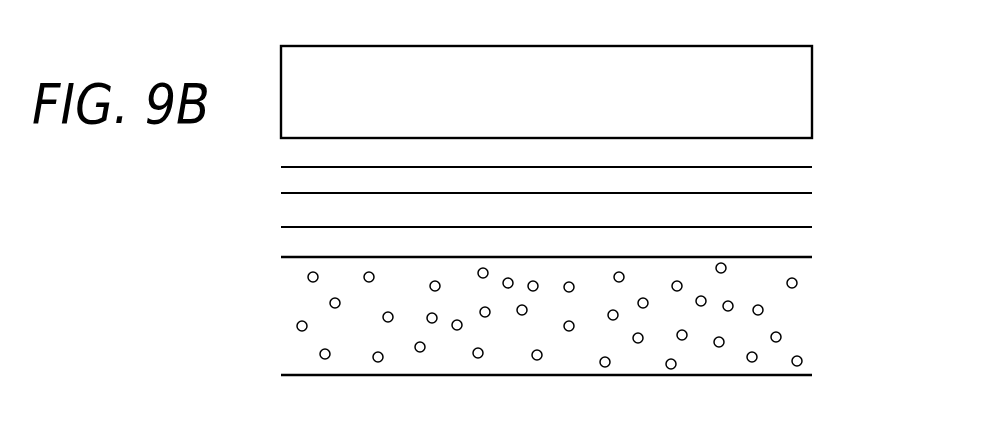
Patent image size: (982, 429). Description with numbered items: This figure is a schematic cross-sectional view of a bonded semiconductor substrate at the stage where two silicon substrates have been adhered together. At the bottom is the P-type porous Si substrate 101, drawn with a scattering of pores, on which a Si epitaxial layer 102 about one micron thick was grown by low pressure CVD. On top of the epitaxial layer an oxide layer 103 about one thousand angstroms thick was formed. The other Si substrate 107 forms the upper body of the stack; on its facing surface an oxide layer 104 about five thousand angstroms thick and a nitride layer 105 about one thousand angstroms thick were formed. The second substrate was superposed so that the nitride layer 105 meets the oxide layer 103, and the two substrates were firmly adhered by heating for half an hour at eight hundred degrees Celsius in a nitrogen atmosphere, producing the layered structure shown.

The porous Si substrate 101 is at (800, 316).
The Si epitaxial layer 102 is at (800, 240).
The oxide layer 103 is at (802, 209).
The oxide layer 104 is at (800, 152).
The nitride layer 105 is at (802, 181).
The Si substrate 107 is at (800, 78).